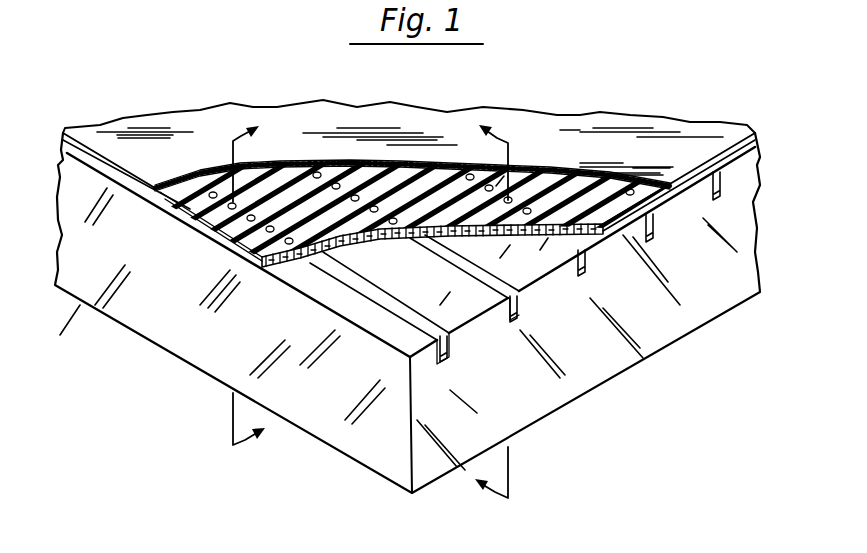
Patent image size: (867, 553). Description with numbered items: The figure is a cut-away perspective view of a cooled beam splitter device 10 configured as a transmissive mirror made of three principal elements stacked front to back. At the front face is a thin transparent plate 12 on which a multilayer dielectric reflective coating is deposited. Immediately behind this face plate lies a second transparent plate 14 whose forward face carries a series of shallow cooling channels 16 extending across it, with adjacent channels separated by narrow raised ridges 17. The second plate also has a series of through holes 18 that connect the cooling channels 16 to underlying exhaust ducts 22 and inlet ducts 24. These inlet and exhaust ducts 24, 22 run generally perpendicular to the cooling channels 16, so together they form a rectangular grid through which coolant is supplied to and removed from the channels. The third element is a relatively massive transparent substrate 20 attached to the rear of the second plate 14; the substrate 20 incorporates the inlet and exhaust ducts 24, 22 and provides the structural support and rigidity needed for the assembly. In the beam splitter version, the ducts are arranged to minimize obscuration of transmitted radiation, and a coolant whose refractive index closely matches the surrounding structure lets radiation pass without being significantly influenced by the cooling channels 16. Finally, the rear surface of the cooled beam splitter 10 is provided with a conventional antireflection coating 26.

The cooled beam splitter device 10 is at (724, 95).
The thin transparent plate 12 is at (613, 140).
The second transparent plate 14 is at (374, 238).
The cooling channels 16 is at (190, 270).
The raised ridges 17 is at (190, 206).
The through holes 18 is at (262, 244).
The transparent substrate 20 is at (168, 352).
The exhaust ducts 22 is at (518, 299).
The inlet ducts 24 is at (444, 336).
The antireflection coating 26 is at (126, 322).